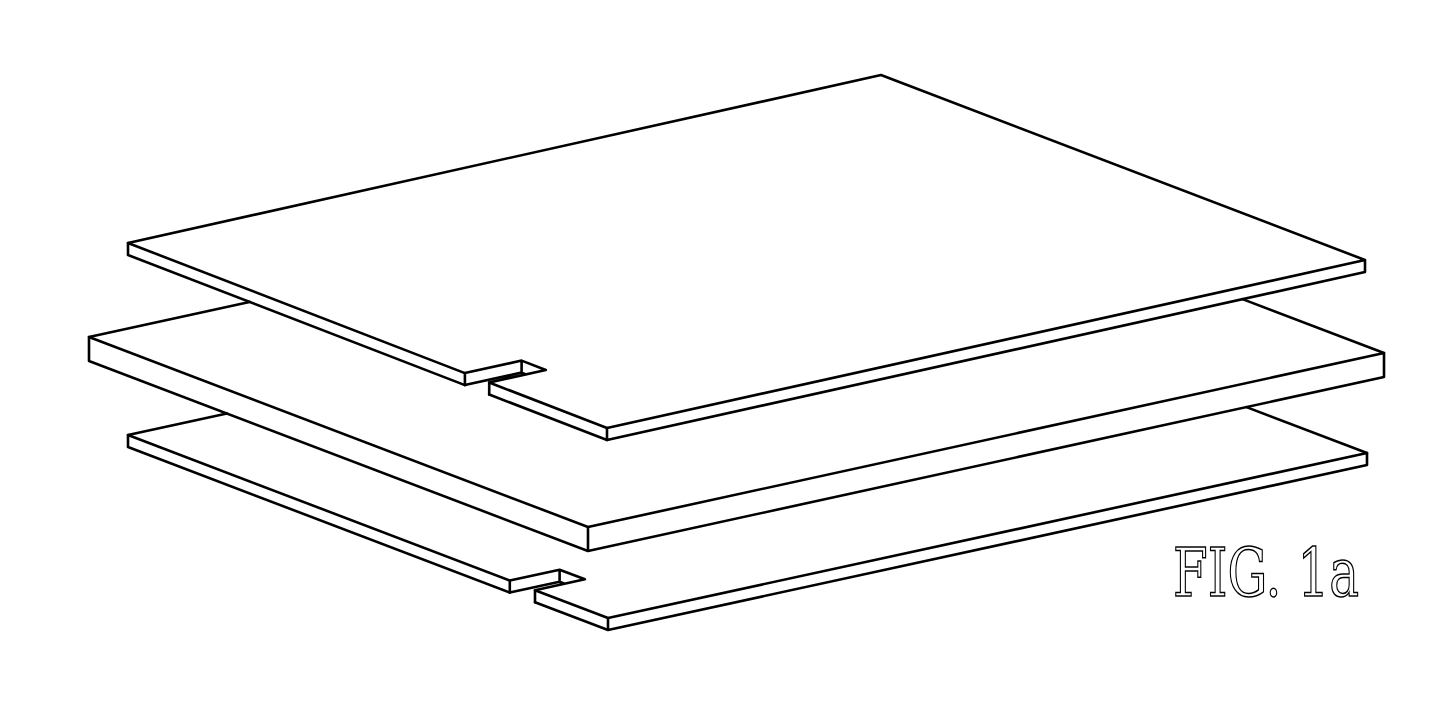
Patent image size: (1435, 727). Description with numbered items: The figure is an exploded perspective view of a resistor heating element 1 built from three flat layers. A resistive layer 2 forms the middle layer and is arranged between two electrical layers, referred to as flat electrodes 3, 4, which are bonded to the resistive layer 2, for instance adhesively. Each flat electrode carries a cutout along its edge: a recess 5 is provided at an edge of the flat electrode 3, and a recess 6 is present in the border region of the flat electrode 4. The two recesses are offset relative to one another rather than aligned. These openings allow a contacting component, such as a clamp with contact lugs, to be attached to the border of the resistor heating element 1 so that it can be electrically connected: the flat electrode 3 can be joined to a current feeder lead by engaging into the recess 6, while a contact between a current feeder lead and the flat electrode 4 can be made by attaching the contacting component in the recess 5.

The resistor heating element 1 is at (756, 351).
The resistive layer 2 is at (1338, 350).
The flat electrode 3 is at (775, 519).
The flat electrode 4 is at (752, 257).
The recess 5 is at (525, 597).
The recess 6 is at (482, 393).